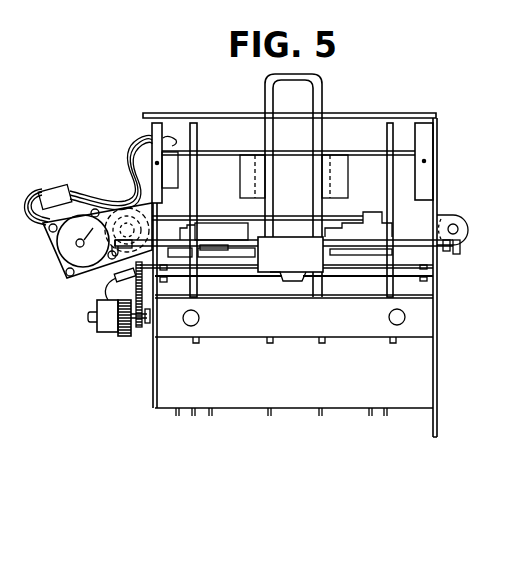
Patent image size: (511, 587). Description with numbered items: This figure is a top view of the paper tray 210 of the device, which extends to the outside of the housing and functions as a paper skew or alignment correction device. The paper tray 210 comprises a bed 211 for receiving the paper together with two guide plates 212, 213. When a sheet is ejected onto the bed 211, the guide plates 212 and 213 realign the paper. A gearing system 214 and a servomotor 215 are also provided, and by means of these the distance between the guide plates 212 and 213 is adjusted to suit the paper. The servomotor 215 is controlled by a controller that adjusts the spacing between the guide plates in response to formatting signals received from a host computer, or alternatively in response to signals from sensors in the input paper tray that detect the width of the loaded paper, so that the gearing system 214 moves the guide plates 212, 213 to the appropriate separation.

The paper tray 210 is at (405, 91).
The bed 211 is at (284, 391).
The guide plate 212 is at (158, 366).
The guide plate 213 is at (431, 367).
The gearing system 214 is at (125, 333).
The servomotor 215 is at (100, 190).